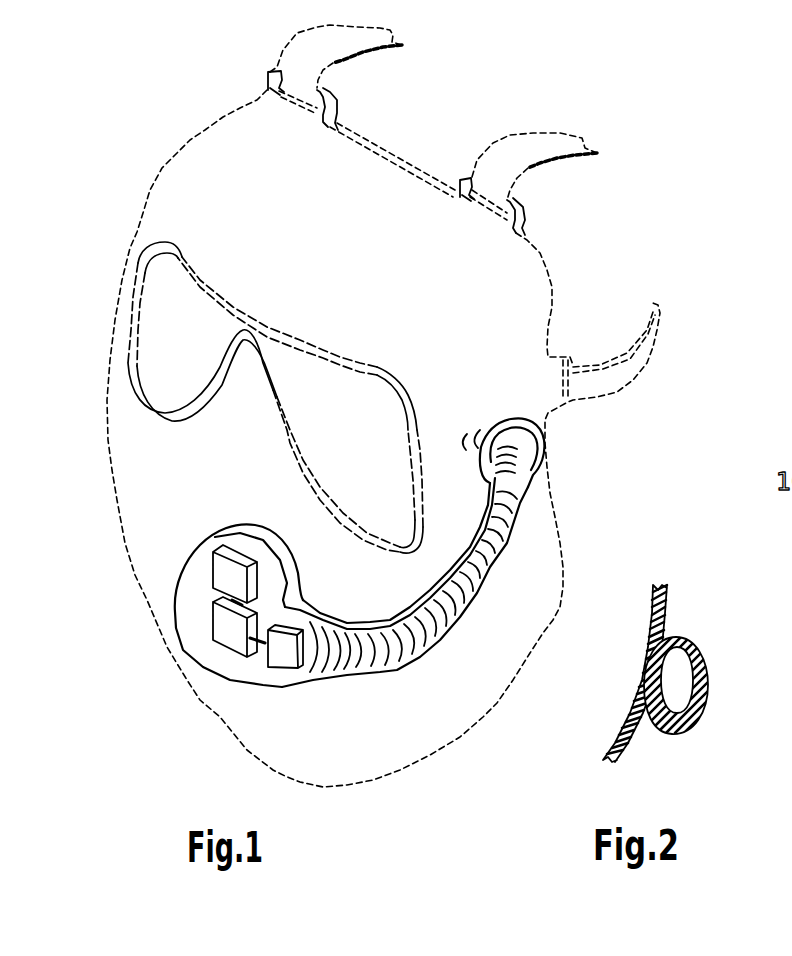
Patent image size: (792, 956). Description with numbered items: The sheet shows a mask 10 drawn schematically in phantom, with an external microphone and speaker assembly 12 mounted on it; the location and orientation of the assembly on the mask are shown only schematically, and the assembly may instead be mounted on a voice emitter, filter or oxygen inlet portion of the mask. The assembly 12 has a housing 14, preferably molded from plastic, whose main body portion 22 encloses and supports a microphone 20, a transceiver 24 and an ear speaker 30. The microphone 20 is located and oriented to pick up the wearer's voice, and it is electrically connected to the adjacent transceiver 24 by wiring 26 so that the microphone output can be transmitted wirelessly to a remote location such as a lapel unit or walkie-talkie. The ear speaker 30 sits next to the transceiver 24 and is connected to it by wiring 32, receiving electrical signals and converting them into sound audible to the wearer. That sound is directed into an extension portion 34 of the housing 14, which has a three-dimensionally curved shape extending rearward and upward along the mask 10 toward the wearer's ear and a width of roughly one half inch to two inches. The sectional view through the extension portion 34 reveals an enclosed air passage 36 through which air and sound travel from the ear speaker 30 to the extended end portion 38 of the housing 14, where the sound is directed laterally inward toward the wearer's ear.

In FIG. 1, the mask 10 is at (118, 547).
In FIG. 2, the mask 10 is at (618, 755).
In FIG. 1, the external microphone and speaker assembly 12 is at (195, 678).
In FIG. 1, the housing 14 is at (399, 583).
In FIG. 2, the housing 14 is at (670, 679).
In FIG. 1, the microphone 20 is at (233, 553).
In FIG. 1, the main body portion 22 is at (263, 525).
In FIG. 1, the transceiver 24 is at (227, 623).
In FIG. 1, the wiring 26 is at (237, 607).
In FIG. 1, the ear speaker 30 is at (285, 657).
In FIG. 1, the wiring 32 is at (260, 643).
In FIG. 1, the extension portion 34 is at (398, 668).
In FIG. 2, the extension portion 34 is at (682, 730).
In FIG. 2, the air passage 36 is at (673, 678).
In FIG. 1, the extended end portion 38 is at (530, 444).